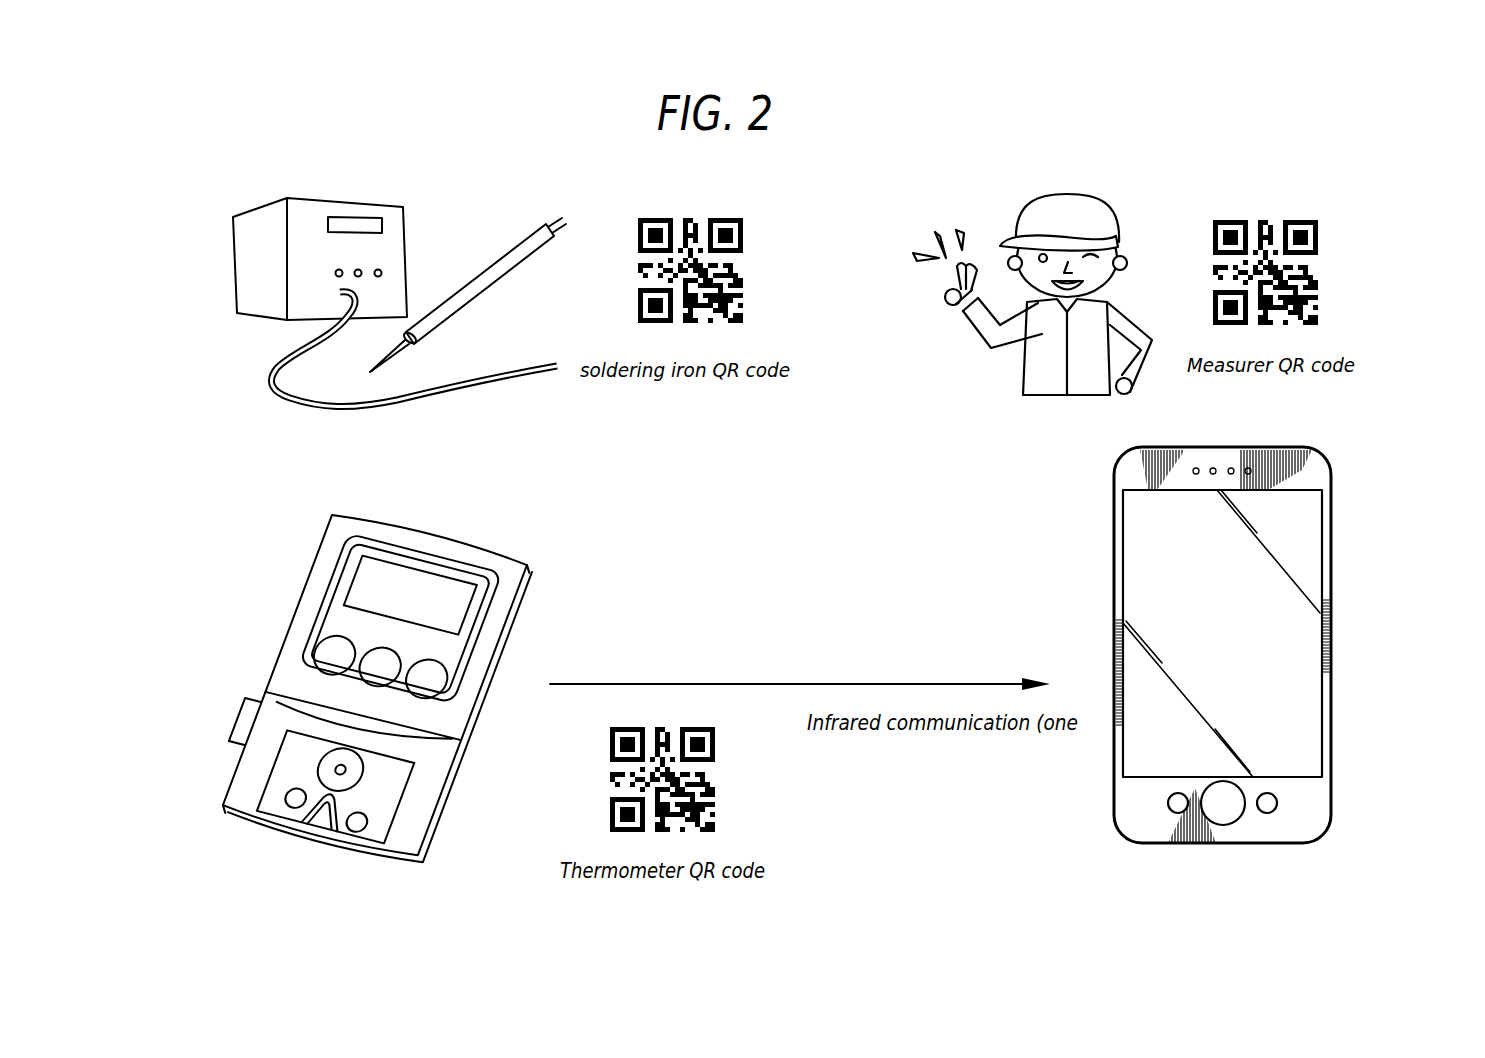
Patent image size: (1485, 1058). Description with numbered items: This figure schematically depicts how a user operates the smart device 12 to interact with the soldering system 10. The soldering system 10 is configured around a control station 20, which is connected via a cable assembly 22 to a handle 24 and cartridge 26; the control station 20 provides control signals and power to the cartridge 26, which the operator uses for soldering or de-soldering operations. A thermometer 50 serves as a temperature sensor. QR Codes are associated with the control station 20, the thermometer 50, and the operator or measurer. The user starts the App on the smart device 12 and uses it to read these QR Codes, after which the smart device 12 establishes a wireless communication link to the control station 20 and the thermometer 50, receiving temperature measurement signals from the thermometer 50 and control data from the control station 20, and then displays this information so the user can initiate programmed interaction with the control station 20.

The soldering system 10 is at (255, 359).
The control station 20 is at (233, 262).
The cable assembly 22 is at (385, 405).
The handle 24 is at (448, 320).
The cartridge 26 is at (392, 357).
The thermometer 50 is at (212, 767).
The smart device 12 is at (1370, 768).